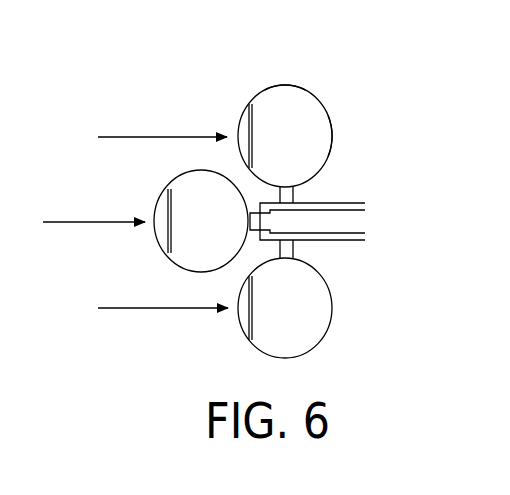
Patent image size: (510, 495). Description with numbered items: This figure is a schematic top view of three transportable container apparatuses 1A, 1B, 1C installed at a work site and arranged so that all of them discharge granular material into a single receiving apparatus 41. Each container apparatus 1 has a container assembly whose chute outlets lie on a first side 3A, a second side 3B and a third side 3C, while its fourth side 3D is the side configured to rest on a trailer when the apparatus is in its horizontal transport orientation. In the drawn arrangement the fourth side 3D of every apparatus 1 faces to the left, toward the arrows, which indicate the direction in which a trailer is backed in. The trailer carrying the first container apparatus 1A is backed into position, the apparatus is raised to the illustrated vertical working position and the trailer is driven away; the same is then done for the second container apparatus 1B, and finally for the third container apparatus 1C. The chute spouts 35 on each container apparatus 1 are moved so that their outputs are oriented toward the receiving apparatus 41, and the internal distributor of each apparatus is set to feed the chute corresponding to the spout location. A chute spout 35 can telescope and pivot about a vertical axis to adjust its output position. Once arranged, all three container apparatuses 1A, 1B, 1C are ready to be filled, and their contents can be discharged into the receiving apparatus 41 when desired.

The container apparatus 1 is at (159, 215).
The first container apparatus 1A is at (315, 93).
The second container apparatus 1B is at (332, 318).
The third container apparatus 1C is at (160, 198).
The first side 3A is at (300, 186).
The second side 3B is at (332, 125).
The third side 3C is at (284, 85).
The fourth side 3D is at (240, 118).
The chute spout 35 is at (296, 250).
The receiving apparatus 41 is at (338, 203).